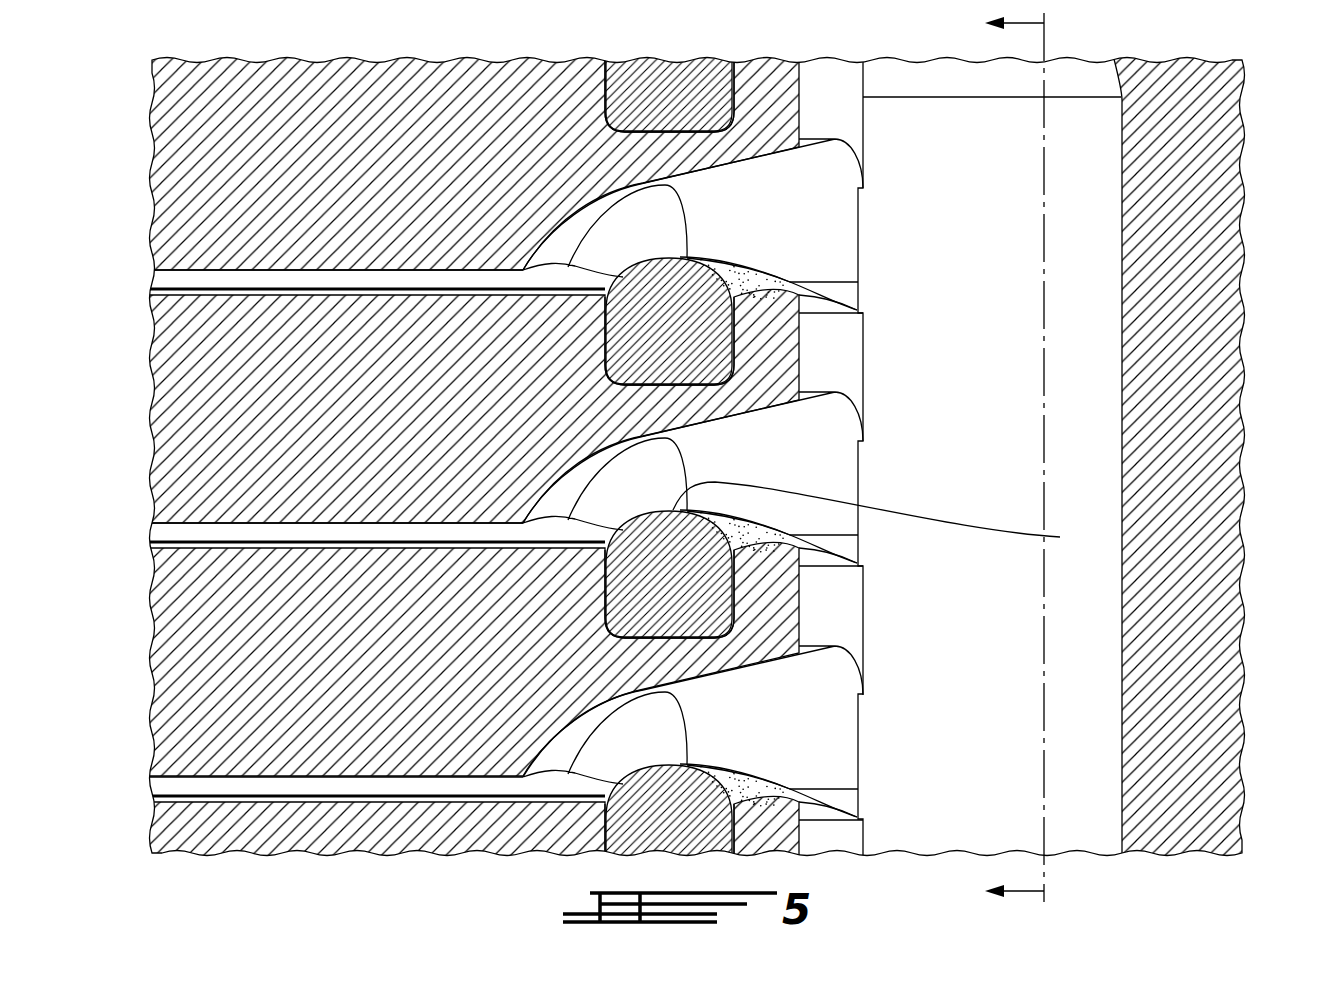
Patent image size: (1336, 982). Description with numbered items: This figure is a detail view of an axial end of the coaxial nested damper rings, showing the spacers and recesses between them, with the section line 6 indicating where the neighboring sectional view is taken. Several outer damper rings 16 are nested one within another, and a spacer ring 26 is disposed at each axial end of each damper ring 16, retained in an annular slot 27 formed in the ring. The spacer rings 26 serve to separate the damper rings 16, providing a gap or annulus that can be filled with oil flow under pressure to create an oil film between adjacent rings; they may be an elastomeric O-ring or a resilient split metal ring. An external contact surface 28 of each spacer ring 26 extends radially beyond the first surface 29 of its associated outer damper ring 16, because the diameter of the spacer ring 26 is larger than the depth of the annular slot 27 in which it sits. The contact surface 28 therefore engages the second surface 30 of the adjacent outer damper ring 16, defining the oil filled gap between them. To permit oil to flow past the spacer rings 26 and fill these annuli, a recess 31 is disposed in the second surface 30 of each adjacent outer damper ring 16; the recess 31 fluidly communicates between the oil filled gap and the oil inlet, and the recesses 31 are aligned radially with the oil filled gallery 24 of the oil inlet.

The outer damper ring 16 is at (263, 178).
The oil filled gallery 24 is at (1011, 485).
The spacer ring 26 is at (672, 82).
The annular slot 27 is at (608, 384).
The external contact surface 28 is at (1060, 537).
The first surface 29 is at (282, 296).
The second surface 30 is at (293, 270).
The recess 31 is at (672, 224).
The section line 6- 6 is at (1027, 459).